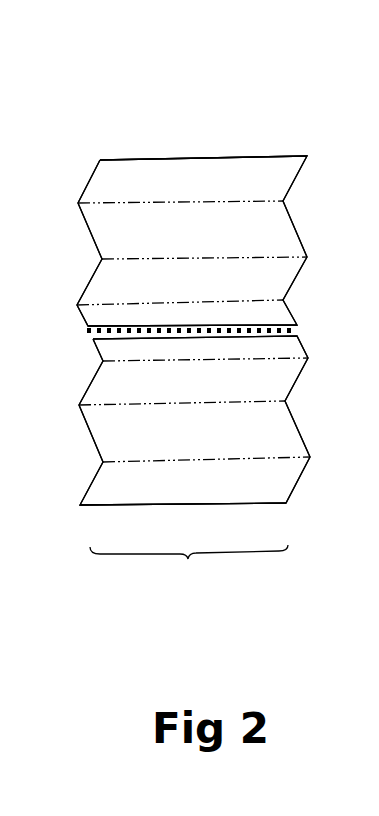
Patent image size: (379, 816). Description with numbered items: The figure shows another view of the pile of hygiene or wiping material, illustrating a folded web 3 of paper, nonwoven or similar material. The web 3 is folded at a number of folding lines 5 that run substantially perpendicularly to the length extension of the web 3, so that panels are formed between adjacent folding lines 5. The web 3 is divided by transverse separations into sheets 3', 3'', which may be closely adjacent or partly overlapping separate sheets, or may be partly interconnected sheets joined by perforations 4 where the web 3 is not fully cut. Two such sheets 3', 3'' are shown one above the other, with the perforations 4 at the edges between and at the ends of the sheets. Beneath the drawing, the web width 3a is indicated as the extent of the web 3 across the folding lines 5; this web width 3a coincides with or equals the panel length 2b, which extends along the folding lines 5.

The folded web 3 is at (169, 300).
The sheet 3'' is at (166, 241).
The sheet 3' is at (169, 420).
The web width 3a is at (189, 568).
The panel length 2b is at (189, 476).
The perforations 4 is at (307, 156).
The folding lines 5 is at (222, 258).